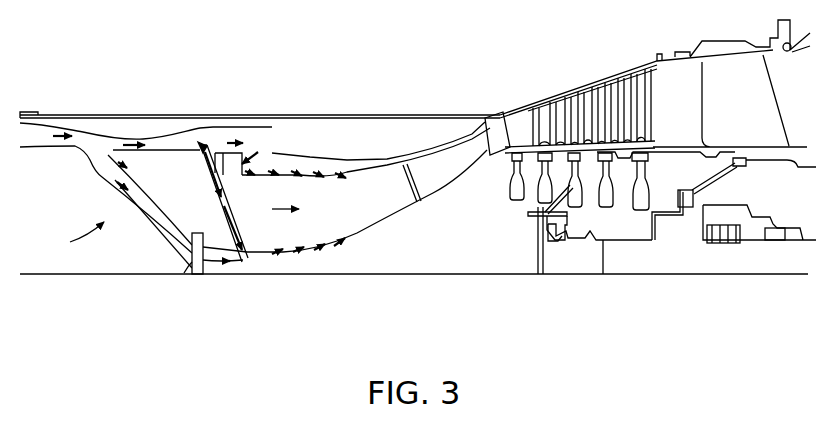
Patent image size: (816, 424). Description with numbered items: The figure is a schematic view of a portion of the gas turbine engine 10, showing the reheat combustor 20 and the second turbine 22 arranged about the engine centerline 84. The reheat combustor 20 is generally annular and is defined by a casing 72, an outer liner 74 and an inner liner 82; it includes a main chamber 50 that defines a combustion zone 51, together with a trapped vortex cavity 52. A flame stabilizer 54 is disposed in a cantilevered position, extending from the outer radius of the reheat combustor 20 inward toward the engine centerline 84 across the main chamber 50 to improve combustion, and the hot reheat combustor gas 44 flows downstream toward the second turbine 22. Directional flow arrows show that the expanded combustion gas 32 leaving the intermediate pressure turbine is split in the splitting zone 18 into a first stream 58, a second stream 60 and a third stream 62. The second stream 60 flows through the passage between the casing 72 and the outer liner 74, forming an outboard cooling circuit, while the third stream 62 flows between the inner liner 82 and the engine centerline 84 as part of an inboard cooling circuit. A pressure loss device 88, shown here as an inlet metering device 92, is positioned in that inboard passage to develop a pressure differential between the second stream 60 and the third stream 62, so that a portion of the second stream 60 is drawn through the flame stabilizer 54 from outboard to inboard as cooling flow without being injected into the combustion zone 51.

The gas turbine engine 10 is at (88, 46).
The splitting zone 18 is at (73, 238).
The reheat combustor 20 is at (265, 98).
The second turbine 22 is at (566, 52).
The expanded combustion gas 32 is at (59, 148).
The reheat combustor gas 44 is at (288, 217).
The main chamber 50 is at (258, 258).
The combustion zone 51 is at (272, 236).
The trapped vortex cavity 52 is at (247, 157).
The flame stabilizer 54 is at (210, 178).
The first stream 58 is at (108, 160).
The second stream 60 is at (132, 141).
The third stream 62 is at (119, 197).
The casing 72 is at (312, 156).
The outer liner 74 is at (349, 170).
The inner liner 82 is at (229, 207).
The engine centerline 84 is at (441, 275).
The pressure loss device 88 is at (200, 274).
The inlet metering device 92 is at (190, 271).